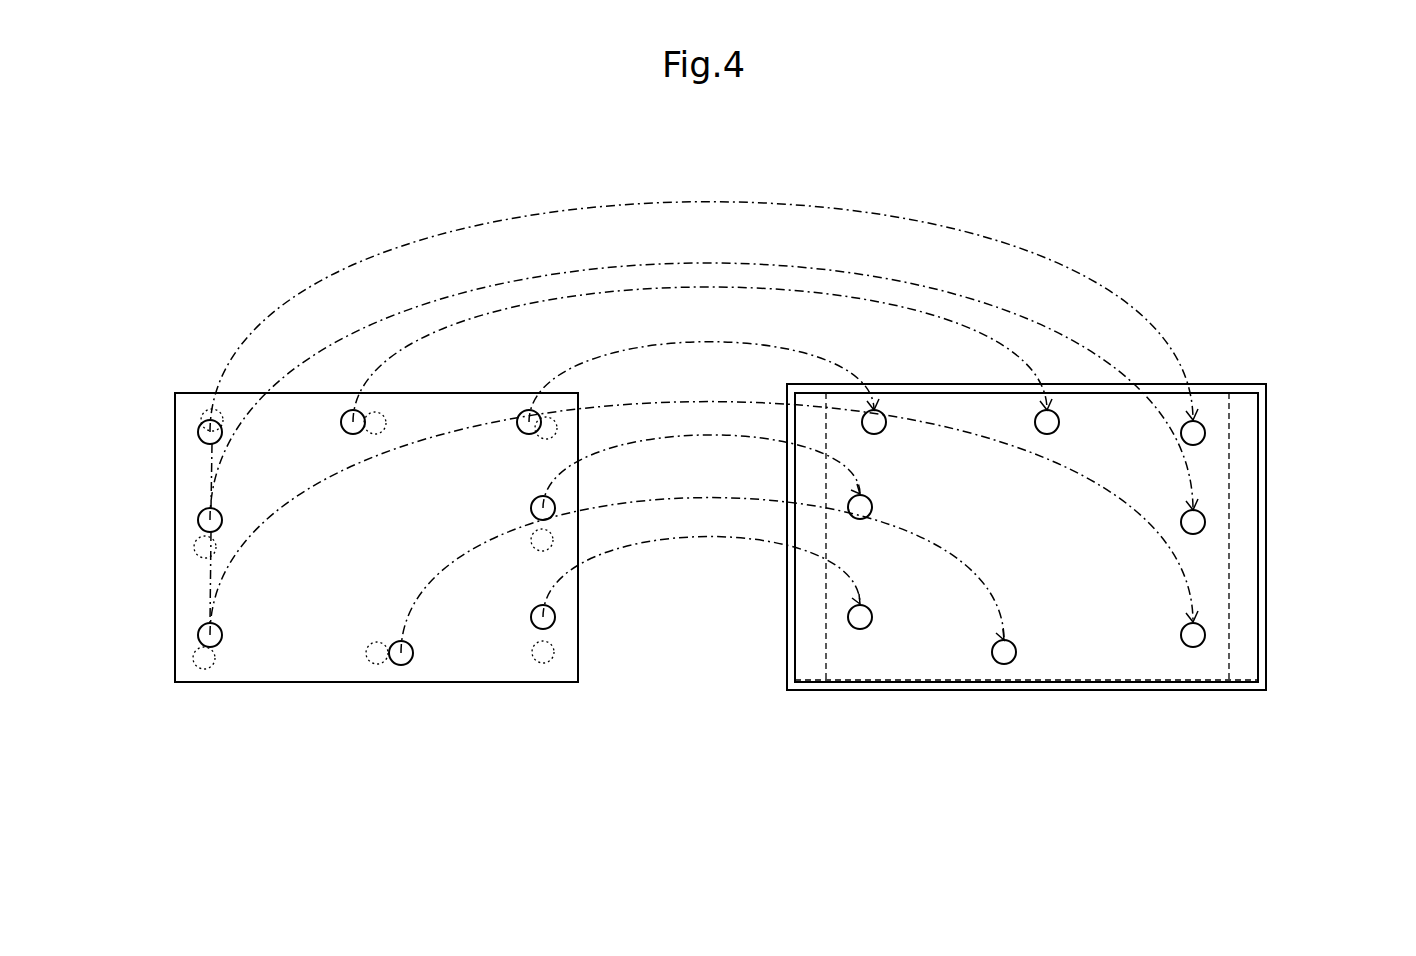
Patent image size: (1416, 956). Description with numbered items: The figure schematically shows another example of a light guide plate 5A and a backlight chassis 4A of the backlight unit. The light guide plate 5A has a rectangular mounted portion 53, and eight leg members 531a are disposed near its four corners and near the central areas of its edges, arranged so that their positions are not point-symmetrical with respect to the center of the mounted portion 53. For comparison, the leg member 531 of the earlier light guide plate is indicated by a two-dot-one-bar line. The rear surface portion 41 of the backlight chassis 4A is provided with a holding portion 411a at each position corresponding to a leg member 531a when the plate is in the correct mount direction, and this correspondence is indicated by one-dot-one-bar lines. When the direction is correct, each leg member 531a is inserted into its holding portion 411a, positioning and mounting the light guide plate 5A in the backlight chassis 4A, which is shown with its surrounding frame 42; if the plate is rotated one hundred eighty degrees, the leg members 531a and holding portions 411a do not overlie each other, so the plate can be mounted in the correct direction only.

The mounted portion 53 is at (450, 662).
The leg member 531 is at (197, 412).
The leg member 531a is at (199, 430).
The light guide plate 5A is at (351, 544).
The backlight chassis 4A is at (1071, 519).
The rear surface portion 41 is at (1087, 643).
The holding portion 411a is at (1040, 413).
The frame 42 is at (1262, 662).